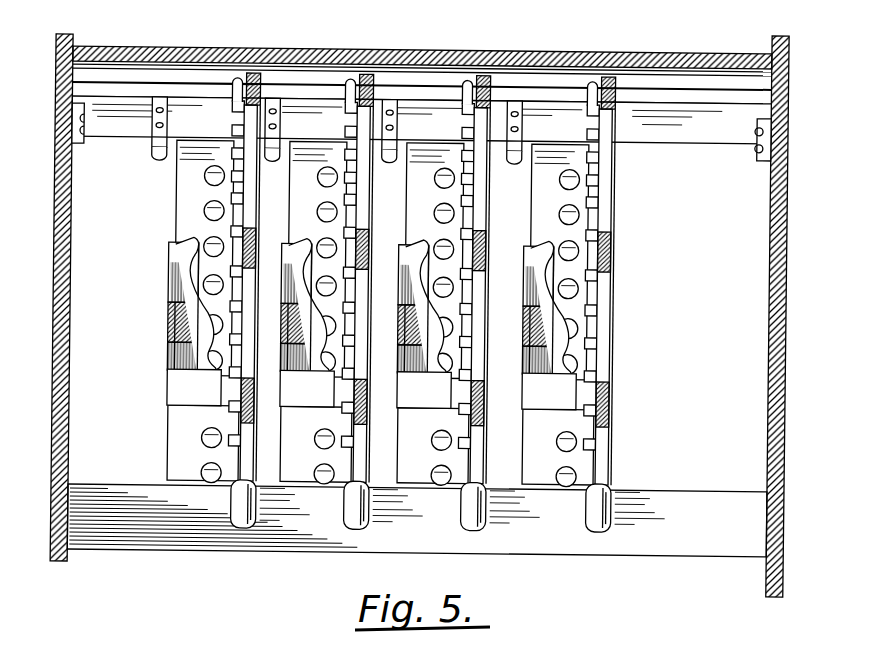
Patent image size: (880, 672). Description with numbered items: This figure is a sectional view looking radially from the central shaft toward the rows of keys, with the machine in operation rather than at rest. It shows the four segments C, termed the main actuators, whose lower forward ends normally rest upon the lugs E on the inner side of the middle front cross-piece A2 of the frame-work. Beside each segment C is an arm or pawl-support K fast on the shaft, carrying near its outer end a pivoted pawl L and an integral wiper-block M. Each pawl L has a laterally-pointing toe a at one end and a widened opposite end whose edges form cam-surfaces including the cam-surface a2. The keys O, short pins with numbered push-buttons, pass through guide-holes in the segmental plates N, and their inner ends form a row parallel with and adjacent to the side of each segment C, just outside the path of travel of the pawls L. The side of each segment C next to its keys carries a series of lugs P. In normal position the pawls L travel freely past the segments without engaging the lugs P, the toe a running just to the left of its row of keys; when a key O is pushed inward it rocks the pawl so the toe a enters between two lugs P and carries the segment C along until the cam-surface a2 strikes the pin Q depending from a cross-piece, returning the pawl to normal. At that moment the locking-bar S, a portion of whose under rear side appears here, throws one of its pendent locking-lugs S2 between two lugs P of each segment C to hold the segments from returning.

The locking-bar S is at (154, 48).
The segments C is at (258, 75).
The locking-lugs S2 is at (584, 86).
The pin Q is at (160, 163).
The segmental plates N is at (215, 150).
The keys O is at (206, 210).
The lugs P is at (242, 206).
The toe a is at (194, 244).
The pawl L is at (168, 290).
The arms or pawl-supports K is at (168, 326).
The cam-surface a2 is at (523, 360).
The wiper-blocks M is at (371, 389).
The lugs E is at (260, 506).
The middle front cross-piece A2 is at (598, 553).